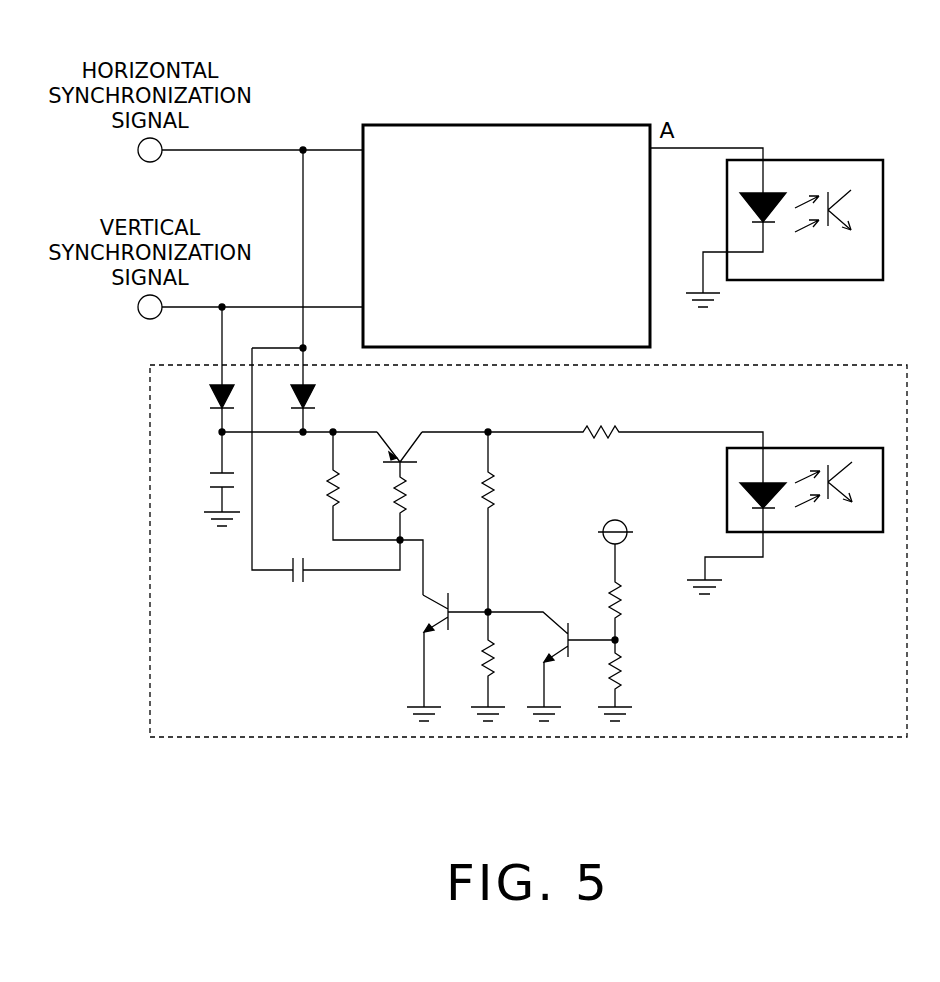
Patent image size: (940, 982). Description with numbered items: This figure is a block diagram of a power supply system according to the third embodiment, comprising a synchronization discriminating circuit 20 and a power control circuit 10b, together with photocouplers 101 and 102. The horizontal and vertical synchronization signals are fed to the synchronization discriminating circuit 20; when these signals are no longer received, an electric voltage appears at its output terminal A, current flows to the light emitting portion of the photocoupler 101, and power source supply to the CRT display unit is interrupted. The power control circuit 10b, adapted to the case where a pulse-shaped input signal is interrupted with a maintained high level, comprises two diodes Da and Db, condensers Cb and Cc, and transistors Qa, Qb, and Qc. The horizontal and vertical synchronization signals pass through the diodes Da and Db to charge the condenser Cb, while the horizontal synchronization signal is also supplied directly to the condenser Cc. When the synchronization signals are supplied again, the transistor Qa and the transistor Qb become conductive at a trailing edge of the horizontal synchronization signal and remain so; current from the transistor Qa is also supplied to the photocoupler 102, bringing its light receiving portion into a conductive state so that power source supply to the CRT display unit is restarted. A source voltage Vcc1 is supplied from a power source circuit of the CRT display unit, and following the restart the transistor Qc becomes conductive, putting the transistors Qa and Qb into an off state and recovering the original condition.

The synchronization discriminating circuit 20 is at (513, 125).
The photocoupler 101 is at (805, 160).
The photocoupler 102 is at (840, 448).
The power control circuit 10b is at (553, 737).
The diode Da is at (199, 426).
The diode Db is at (324, 405).
The condenser Cb is at (203, 492).
The condenser Cc is at (343, 576).
The transistor Qa is at (432, 473).
The transistor Qb is at (436, 657).
The transistor Qc is at (551, 651).
The source voltage Vcc1 is at (613, 606).